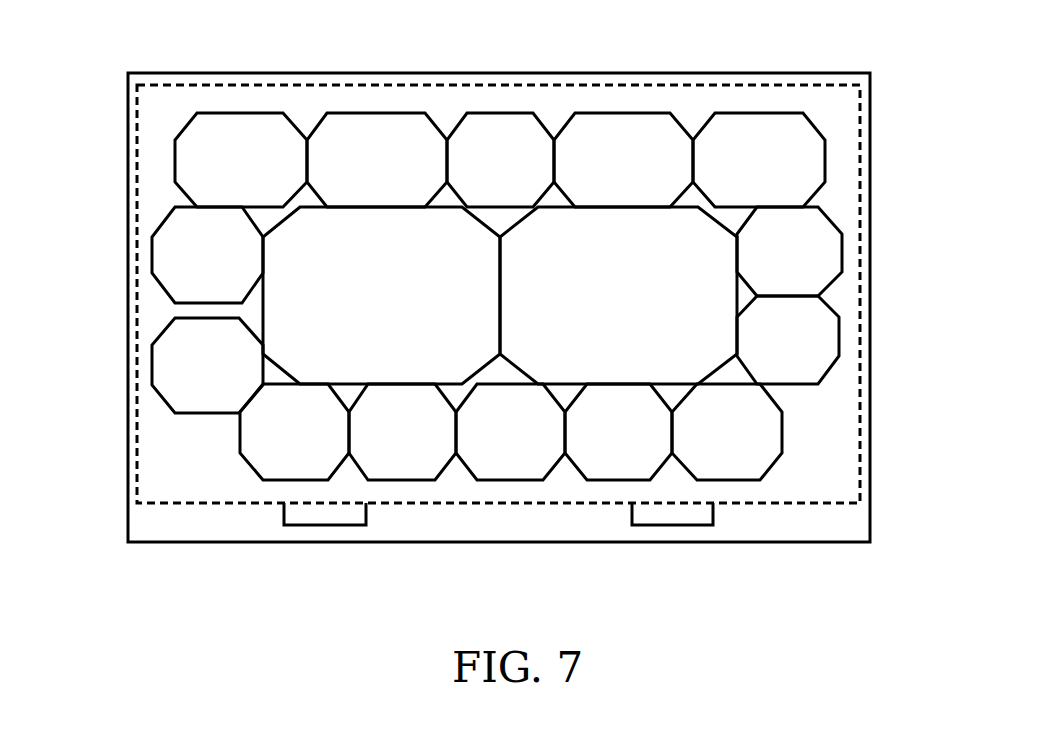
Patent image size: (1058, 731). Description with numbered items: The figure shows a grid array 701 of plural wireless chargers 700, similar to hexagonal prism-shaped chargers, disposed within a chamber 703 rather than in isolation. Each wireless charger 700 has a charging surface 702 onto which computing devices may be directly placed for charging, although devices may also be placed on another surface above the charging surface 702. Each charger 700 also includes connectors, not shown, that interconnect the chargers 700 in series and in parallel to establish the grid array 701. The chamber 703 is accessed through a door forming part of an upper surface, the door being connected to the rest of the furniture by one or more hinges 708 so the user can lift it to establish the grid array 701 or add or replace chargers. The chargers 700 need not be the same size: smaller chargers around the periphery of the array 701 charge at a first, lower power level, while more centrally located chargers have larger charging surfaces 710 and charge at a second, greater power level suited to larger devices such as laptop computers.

The wireless charger 700 is at (128, 440).
The grid array 701 is at (846, 42).
The charging surface 702 is at (243, 125).
The chamber 703 is at (840, 480).
The hinge 708 is at (321, 525).
The larger charging surface 710 is at (376, 352).